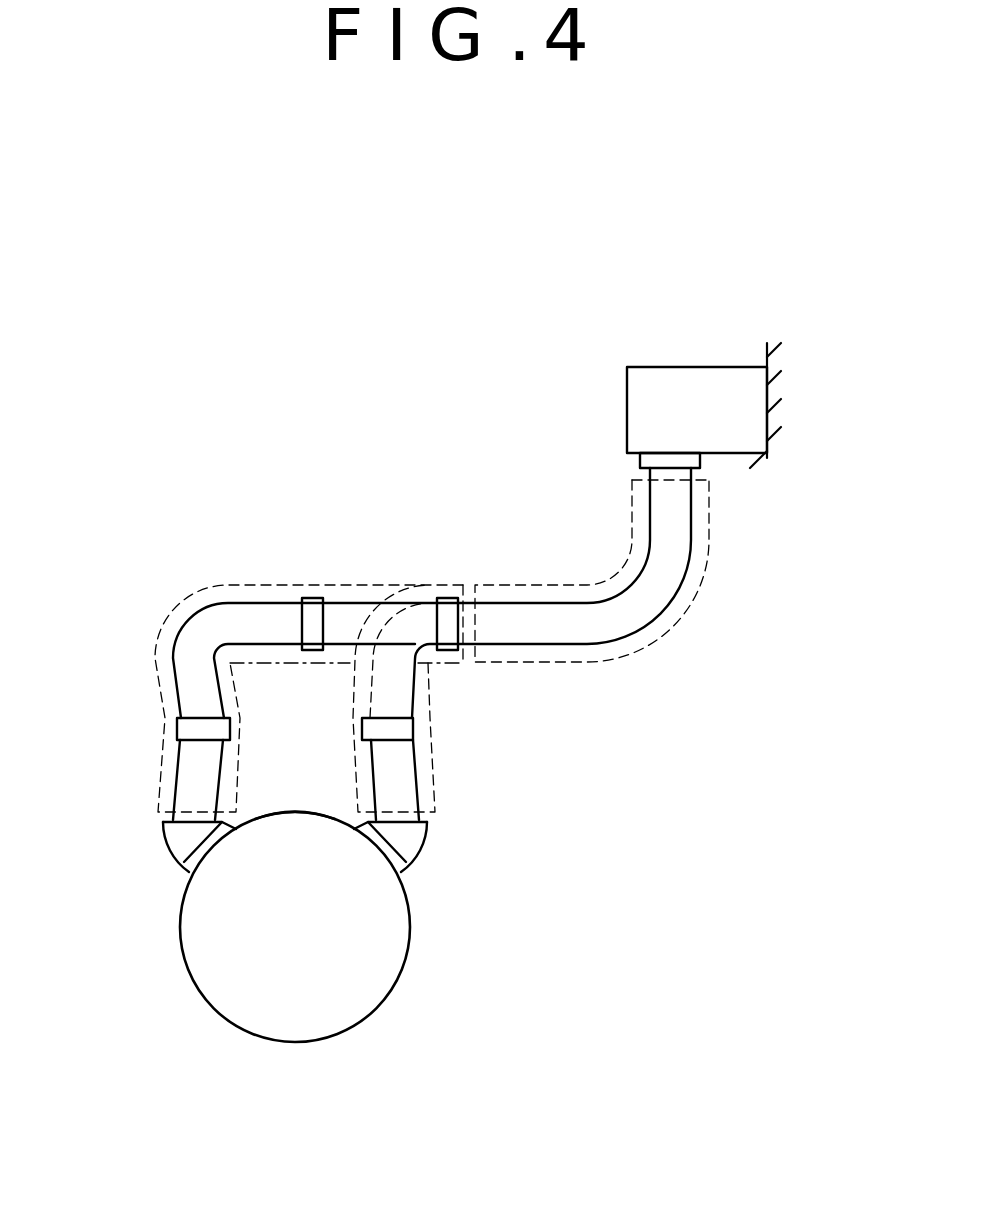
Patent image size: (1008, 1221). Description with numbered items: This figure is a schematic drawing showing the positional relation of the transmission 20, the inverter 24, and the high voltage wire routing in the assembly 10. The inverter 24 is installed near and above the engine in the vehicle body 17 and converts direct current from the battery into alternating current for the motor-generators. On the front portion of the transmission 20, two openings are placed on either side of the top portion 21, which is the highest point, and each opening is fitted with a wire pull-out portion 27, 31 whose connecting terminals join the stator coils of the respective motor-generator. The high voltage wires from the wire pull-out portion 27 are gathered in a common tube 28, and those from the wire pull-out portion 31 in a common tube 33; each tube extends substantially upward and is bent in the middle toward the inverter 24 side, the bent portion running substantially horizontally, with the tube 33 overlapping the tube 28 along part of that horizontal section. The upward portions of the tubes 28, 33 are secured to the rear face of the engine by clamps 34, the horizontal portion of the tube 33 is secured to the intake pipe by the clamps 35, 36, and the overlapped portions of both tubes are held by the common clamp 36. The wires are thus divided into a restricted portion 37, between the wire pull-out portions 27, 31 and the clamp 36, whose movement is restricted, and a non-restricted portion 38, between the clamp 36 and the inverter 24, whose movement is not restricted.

The pipe assembly 10 is at (366, 452).
The vehicle body 17 is at (780, 400).
The transmission 20 is at (390, 958).
The top portion 21 is at (295, 812).
The inverter 24 is at (645, 406).
The wire pull-out portion 27 is at (407, 833).
The tube 28 is at (395, 775).
The wire pull-out portion 31 is at (183, 837).
The tube 33 is at (187, 780).
The clamp 34 is at (187, 730).
The clamp 35 is at (313, 608).
The clamp 36 is at (447, 608).
The restricted portion 37 is at (187, 598).
The non-restricted portion 38 is at (686, 598).